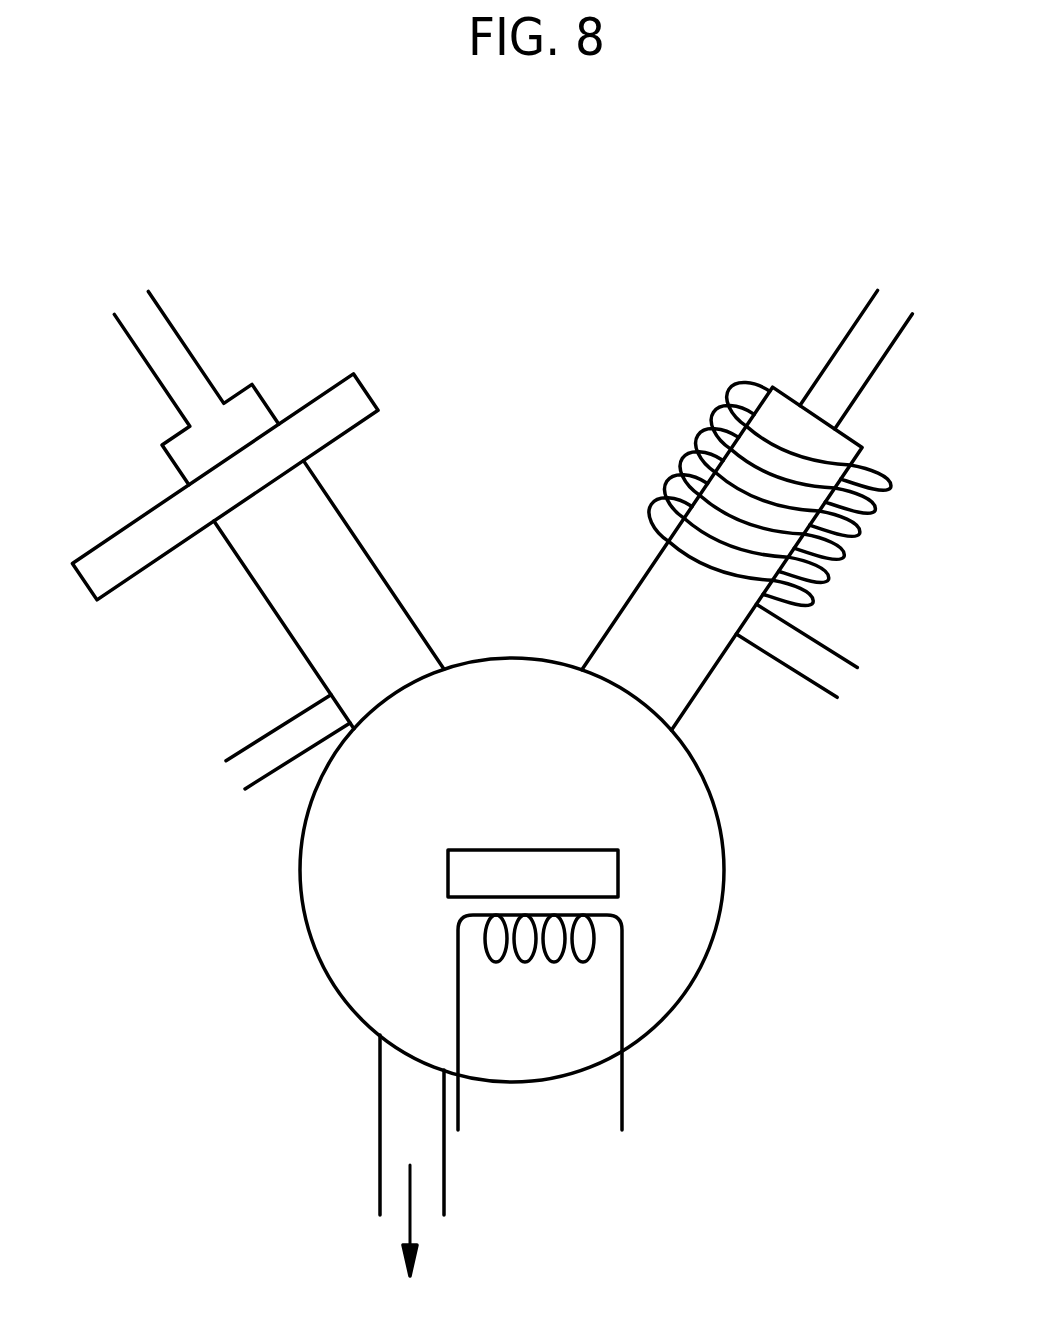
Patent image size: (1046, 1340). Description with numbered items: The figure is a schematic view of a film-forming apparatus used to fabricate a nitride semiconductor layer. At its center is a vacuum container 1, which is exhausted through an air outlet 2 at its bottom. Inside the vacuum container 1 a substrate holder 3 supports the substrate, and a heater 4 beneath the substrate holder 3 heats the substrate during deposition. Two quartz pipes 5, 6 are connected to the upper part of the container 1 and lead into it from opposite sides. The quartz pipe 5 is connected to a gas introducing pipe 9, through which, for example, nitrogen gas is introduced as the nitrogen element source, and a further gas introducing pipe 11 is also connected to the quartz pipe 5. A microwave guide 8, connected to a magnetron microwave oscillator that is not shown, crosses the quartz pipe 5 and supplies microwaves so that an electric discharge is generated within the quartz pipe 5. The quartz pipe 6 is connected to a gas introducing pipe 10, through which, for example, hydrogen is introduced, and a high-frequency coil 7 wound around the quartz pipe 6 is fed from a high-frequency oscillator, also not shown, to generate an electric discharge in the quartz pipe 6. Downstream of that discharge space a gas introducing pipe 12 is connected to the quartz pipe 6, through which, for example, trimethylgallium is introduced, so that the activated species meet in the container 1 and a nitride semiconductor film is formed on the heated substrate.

The vacuum container 1 is at (718, 817).
The air outlet 2 is at (380, 1170).
The substrate holder 3 is at (532, 848).
The heater 4 is at (458, 973).
The quartz pipe 5 is at (251, 577).
The quartz pipe 6 is at (862, 449).
The high-frequency coil 7 is at (729, 390).
The microwave guide 8 is at (148, 510).
The gas introducing pipe 9 is at (183, 345).
The gas introducing pipe 10 is at (836, 352).
The gas introducing pipe 11 is at (272, 777).
The gas introducing pipe 12 is at (825, 648).